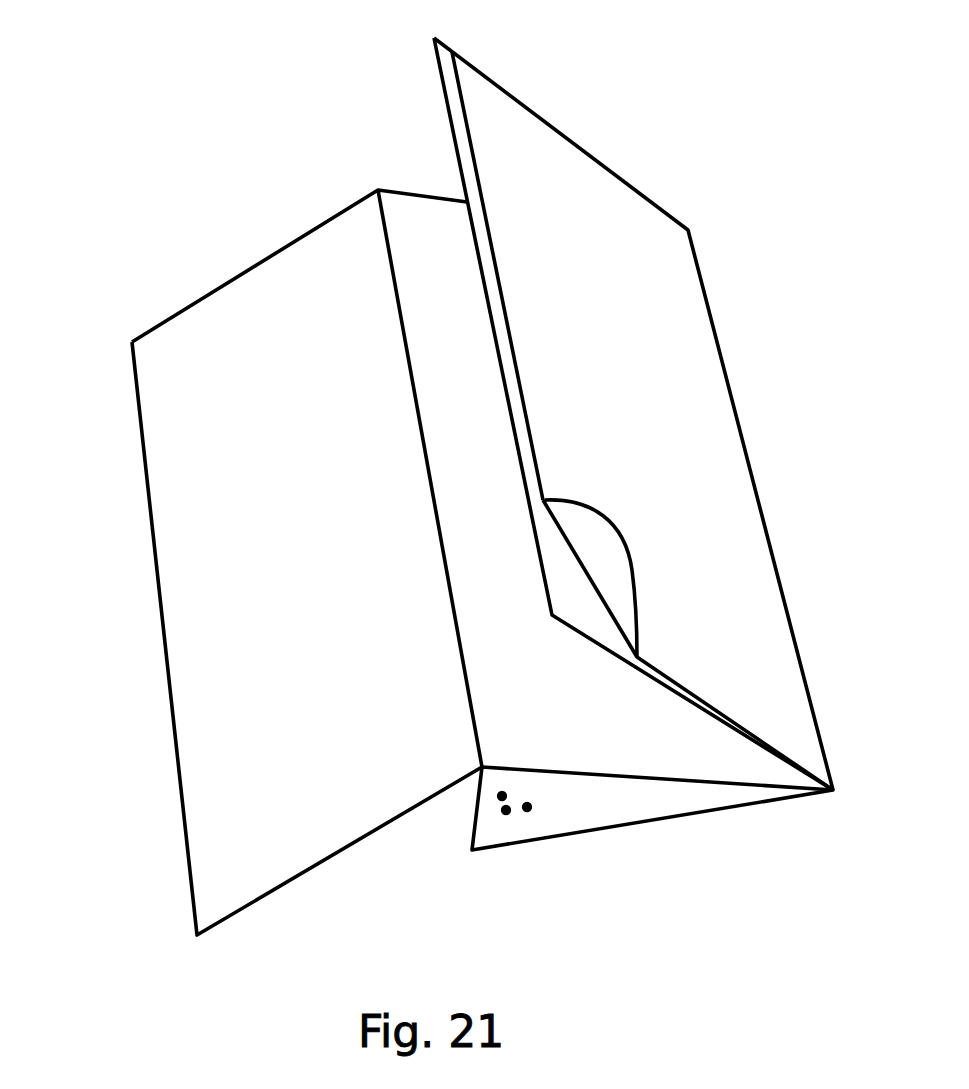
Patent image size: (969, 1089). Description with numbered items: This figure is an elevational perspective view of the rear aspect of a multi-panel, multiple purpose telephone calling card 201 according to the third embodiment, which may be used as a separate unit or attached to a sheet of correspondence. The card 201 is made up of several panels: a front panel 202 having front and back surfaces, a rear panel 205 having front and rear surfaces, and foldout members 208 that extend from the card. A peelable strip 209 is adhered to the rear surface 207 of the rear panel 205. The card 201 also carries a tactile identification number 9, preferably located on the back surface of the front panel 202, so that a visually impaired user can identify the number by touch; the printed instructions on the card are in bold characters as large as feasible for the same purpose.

The telephone calling card 201 is at (260, 190).
The foldout members 208 is at (447, 415).
The peelable strip 209 is at (700, 343).
The rear surface 207 is at (522, 443).
The front panel 202 is at (580, 610).
The rear panel 205 is at (695, 803).
The tactile identification number 9 is at (515, 813).